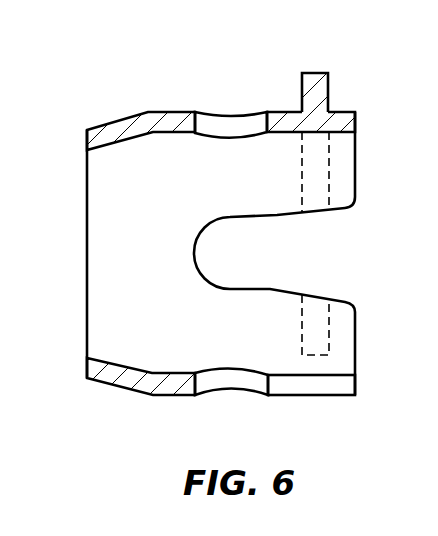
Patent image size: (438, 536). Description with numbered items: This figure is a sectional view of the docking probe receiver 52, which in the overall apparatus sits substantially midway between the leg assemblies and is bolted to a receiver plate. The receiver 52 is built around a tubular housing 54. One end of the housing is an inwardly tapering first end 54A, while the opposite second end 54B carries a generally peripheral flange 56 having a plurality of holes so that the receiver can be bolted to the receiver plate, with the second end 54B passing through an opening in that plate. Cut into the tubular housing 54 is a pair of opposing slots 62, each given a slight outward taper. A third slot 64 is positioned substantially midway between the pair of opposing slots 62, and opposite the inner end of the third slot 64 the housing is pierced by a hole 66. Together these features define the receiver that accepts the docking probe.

The docking probe receiver 52 is at (136, 113).
The tubular housing 54 is at (163, 387).
The inwardly tapering first end 54A is at (103, 136).
The second end 54B is at (343, 113).
The peripheral flange 56 is at (313, 73).
The pair of opposing slots 62 is at (262, 289).
The third slot 64 is at (320, 385).
The hole 66 is at (220, 114).